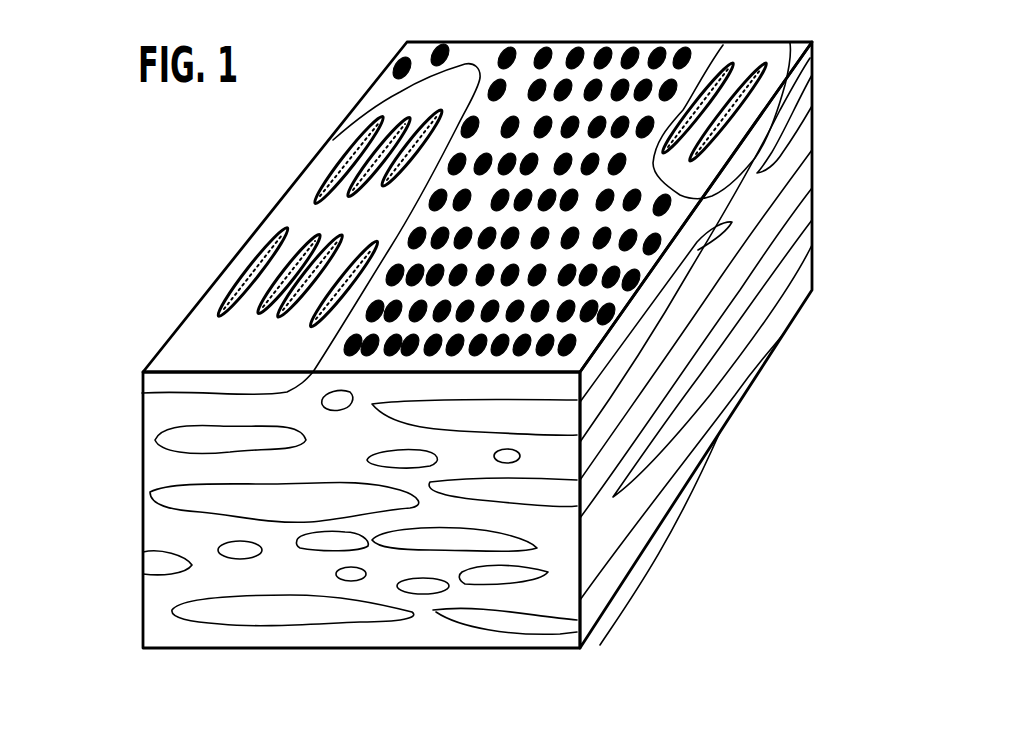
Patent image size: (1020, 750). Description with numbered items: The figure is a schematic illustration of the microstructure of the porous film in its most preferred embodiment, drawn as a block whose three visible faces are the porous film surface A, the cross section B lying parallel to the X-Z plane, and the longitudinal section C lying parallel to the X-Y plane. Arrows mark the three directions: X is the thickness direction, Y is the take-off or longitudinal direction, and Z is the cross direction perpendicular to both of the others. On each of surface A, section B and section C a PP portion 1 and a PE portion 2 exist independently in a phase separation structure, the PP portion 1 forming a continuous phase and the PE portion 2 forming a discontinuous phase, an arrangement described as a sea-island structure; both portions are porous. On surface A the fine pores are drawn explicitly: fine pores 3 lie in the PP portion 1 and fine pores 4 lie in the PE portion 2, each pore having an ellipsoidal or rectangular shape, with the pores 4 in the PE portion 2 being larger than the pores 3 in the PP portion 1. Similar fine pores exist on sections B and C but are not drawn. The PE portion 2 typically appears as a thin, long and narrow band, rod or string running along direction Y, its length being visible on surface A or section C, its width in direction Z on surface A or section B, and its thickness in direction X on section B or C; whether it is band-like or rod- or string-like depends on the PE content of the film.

The PP portion 1 is at (748, 200).
The PE portion 2 is at (452, 90).
The fine pores in PP portion 3 is at (592, 47).
The fine pores in PE portion 4 is at (282, 258).
The porous film surface A is at (385, 91).
The cross section B is at (447, 650).
The longitudinal section C is at (724, 426).
The thickness direction X is at (847, 140).
The take-off direction Y is at (283, 115).
The cross direction Z is at (295, 678).